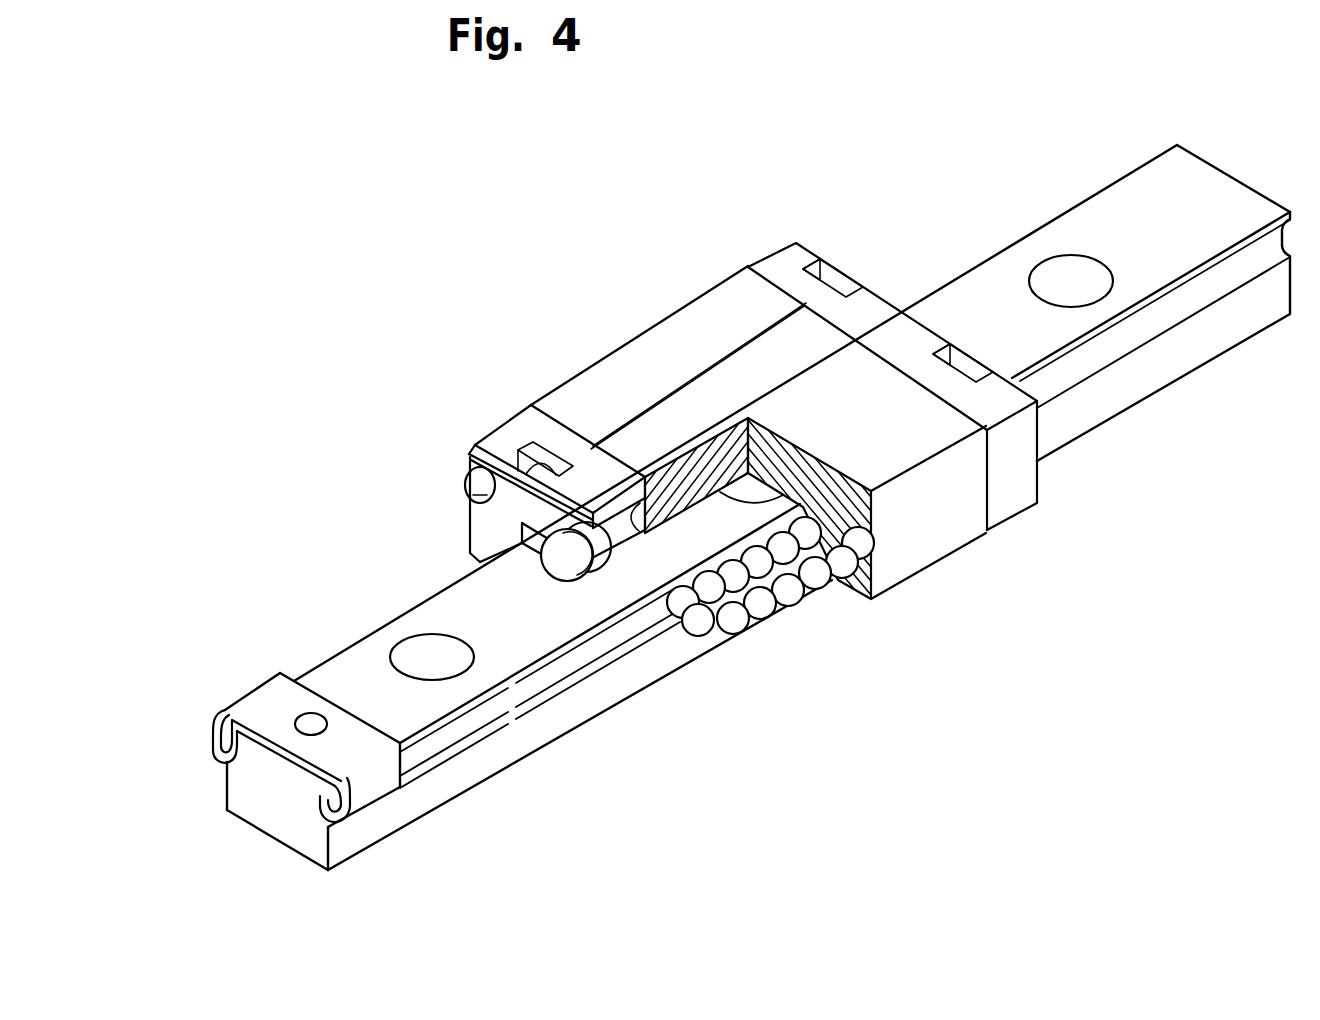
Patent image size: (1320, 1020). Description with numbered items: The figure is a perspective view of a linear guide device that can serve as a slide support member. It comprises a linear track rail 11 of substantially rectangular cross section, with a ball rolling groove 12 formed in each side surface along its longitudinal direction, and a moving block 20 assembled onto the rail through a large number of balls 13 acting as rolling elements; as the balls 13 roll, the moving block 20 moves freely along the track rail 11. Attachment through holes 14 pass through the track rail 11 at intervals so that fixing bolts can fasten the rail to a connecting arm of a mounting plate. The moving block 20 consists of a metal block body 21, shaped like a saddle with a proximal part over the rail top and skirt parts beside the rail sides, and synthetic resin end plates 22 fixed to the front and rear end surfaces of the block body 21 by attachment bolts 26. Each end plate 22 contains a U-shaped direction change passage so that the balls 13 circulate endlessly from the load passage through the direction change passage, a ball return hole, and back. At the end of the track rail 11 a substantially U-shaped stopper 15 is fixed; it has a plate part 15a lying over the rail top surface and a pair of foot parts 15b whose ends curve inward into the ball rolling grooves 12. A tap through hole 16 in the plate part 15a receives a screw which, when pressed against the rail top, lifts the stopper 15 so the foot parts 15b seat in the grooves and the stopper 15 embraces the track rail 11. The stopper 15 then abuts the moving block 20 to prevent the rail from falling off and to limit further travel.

The track rail 11 is at (695, 524).
The ball rolling groove 12 is at (228, 776).
The balls 13 is at (812, 592).
The attachment through hole 14 is at (420, 640).
The stopper 15 is at (309, 759).
The plate part 15a is at (368, 763).
The foot part 15b is at (214, 744).
The tap through hole 16 is at (310, 714).
The moving block 20 is at (705, 373).
The block body 21 is at (700, 292).
The end plate 22 is at (777, 247).
The attachment bolt 26 is at (465, 480).